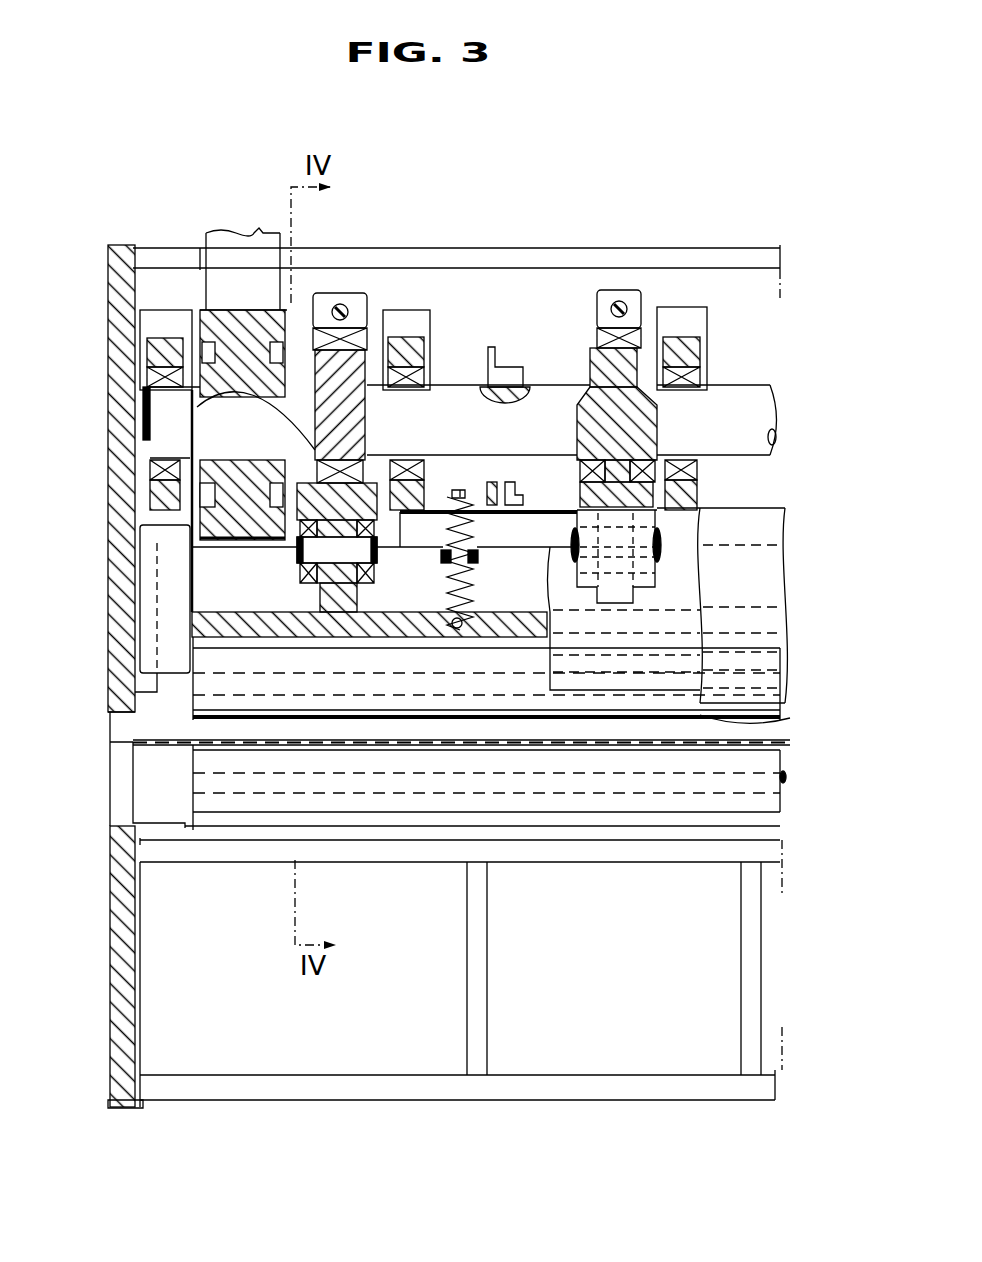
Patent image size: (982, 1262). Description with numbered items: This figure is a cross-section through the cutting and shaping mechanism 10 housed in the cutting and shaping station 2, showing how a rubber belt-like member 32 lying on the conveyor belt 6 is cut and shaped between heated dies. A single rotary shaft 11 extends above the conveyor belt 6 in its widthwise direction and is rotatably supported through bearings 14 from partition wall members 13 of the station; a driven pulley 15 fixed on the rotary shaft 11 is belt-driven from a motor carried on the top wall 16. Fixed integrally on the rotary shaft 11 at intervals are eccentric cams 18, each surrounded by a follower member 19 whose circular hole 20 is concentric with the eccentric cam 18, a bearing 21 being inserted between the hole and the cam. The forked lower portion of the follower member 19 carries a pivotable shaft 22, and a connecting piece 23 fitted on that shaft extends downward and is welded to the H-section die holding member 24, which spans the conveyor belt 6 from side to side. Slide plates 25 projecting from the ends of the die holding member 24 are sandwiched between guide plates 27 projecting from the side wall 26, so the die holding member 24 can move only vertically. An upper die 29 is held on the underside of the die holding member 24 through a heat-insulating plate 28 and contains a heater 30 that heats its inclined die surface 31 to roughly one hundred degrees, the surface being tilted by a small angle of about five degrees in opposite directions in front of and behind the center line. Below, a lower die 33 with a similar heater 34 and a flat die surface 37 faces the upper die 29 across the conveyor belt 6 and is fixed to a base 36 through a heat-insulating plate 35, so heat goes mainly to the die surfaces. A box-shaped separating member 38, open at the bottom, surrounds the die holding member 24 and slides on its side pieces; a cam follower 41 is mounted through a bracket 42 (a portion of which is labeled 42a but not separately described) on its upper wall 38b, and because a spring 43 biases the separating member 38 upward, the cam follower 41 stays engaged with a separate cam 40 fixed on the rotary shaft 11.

The cutting and shaping station 2 is at (82, 462).
The conveyor belt 6 is at (110, 742).
The cutting and shaping mechanism 10 is at (485, 300).
The rotary shaft 11 is at (742, 393).
The partition wall members 13 is at (142, 345).
The bearings 14 is at (148, 388).
The driven pulley 15 is at (235, 405).
The top wall 16 is at (400, 250).
The eccentric cams 18 is at (365, 340).
The follower member 19 is at (335, 300).
The circular hole 20 is at (348, 330).
The bearing 21 is at (362, 345).
The shaft 22 is at (383, 565).
The connecting piece 23 is at (313, 594).
The die holding member 24 is at (217, 583).
The slide plates 25 is at (153, 540).
The side wall 26 is at (110, 618).
The guide plates 27 is at (140, 686).
The heat-insulating plate 28 is at (217, 650).
The upper die 29 is at (200, 693).
The heater 30 is at (240, 693).
The die surface 31 is at (760, 720).
The belt-like member 32 is at (790, 742).
The lower die 33 is at (775, 800).
The heater 34 is at (786, 778).
The heat-insulating plate 35 is at (775, 823).
The base 36 is at (565, 857).
The die surface 37 is at (233, 757).
The separating member 38 is at (777, 583).
The upper wall 38b is at (560, 514).
The cam 40 is at (492, 350).
The cam follower 41 is at (482, 488).
The bracket 42 is at (522, 498).
The leg 42a is at (518, 612).
The spring 43 is at (446, 538).